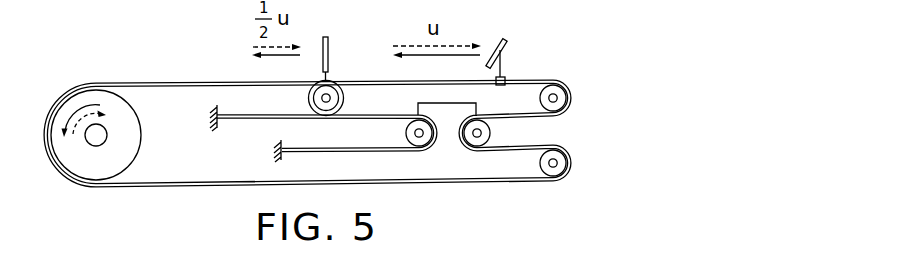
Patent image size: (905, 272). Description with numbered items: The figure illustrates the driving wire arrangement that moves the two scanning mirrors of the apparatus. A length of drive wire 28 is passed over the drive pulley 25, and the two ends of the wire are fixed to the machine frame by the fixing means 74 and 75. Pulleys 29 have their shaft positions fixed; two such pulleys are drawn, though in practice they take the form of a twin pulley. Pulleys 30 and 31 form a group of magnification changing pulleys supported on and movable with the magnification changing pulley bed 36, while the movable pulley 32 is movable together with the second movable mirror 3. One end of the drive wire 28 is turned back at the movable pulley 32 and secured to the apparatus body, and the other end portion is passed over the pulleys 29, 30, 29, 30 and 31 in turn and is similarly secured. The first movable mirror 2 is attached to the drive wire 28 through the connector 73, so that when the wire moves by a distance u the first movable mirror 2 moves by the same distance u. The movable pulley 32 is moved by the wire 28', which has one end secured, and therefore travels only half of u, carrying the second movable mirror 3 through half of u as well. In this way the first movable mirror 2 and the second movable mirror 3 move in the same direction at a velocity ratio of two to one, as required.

The drive wire 28 is at (308, 115).
The wire 28' is at (326, 139).
The drive pulley 25 is at (134, 151).
The wire end fixing means 74 is at (210, 115).
The wire end fixing means 75 is at (271, 161).
The second movable mirror 3 is at (326, 37).
The movable pulley 32 is at (334, 86).
The magnification changing pulley bed 36 is at (436, 103).
The first movable mirror 2 is at (498, 39).
The connector 73 is at (506, 78).
The fixed-position pulleys 29 is at (572, 96).
The magnification changing pulley 31 is at (405, 133).
The magnification changing pulley 30 is at (488, 133).